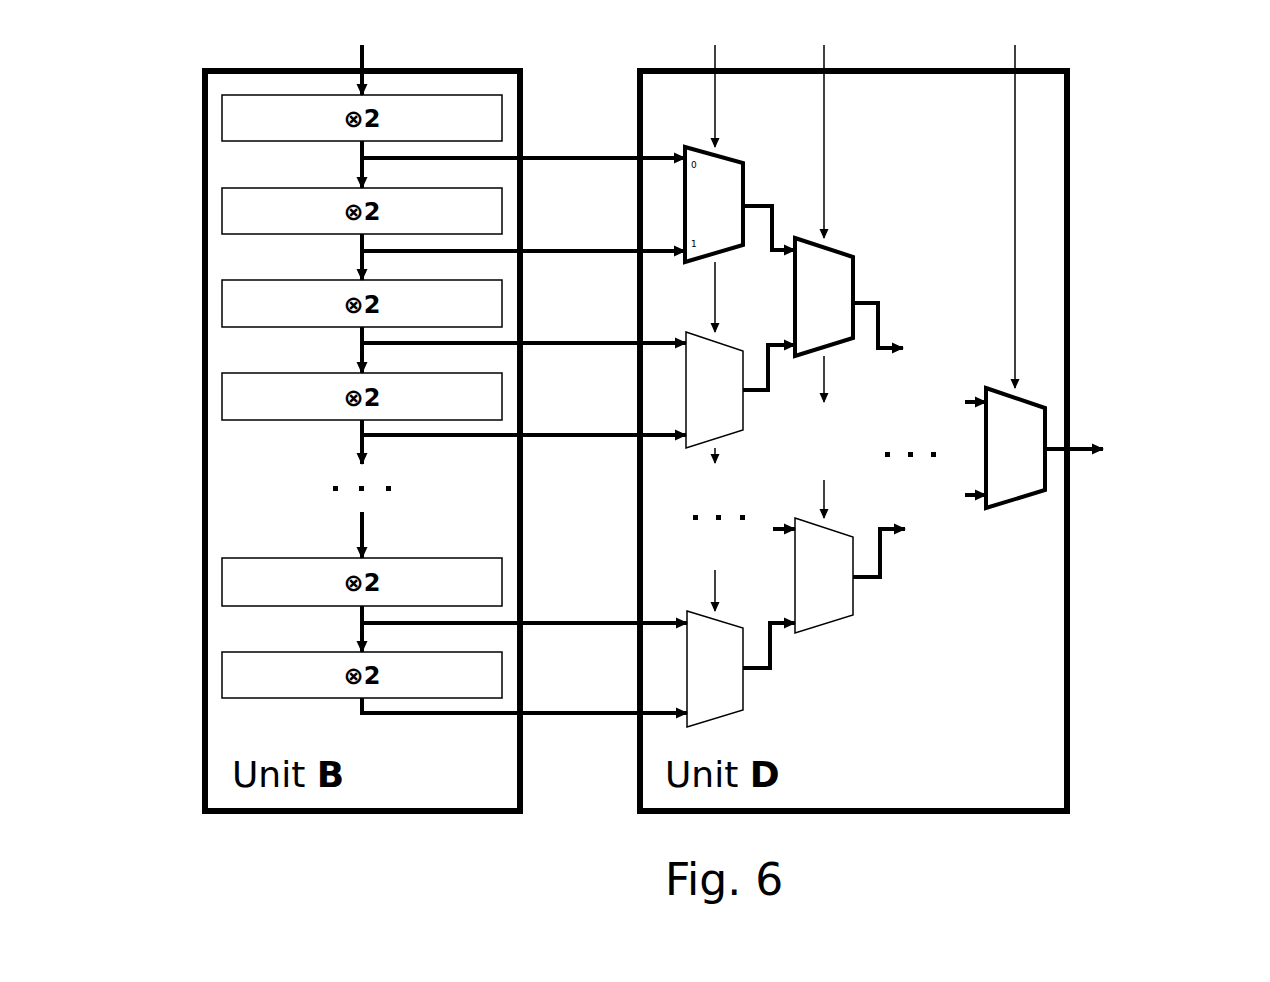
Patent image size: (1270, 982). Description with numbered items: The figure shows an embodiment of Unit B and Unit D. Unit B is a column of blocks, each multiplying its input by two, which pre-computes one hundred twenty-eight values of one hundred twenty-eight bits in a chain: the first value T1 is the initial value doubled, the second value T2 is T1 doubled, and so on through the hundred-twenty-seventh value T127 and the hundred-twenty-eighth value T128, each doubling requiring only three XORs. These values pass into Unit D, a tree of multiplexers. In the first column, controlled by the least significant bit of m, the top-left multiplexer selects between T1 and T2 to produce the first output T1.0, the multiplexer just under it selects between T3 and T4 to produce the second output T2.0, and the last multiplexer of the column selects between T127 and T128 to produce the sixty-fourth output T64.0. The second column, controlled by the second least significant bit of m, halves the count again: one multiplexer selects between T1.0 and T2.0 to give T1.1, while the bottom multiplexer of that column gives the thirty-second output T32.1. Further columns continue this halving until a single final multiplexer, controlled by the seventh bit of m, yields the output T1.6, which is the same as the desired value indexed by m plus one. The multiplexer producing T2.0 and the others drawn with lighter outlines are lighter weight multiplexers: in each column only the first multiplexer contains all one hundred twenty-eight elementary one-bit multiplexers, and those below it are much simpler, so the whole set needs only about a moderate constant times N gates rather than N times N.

The first pre-computed value T1 is at (523, 137).
The second pre-computed value T2 is at (523, 230).
The third pre-computed value T3 is at (524, 322).
The fourth pre-computed value T4 is at (524, 414).
The hundred-twenty-seventh pre-computed value T127 is at (524, 602).
The hundred-twenty-eighth pre-computed value T128 is at (524, 692).
The first Step D0 multiplexer output T1.0 is at (774, 209).
The first Step D1 multiplexer output T1.1 is at (881, 307).
The second Step D0 multiplexer output T2.0 is at (775, 386).
The sixty-fourth Step D0 multiplexer output T64.0 is at (777, 664).
The thirty-second Step D1 multiplexer output T32.1 is at (888, 570).
The final multiplexer output T1.6 is at (1154, 451).